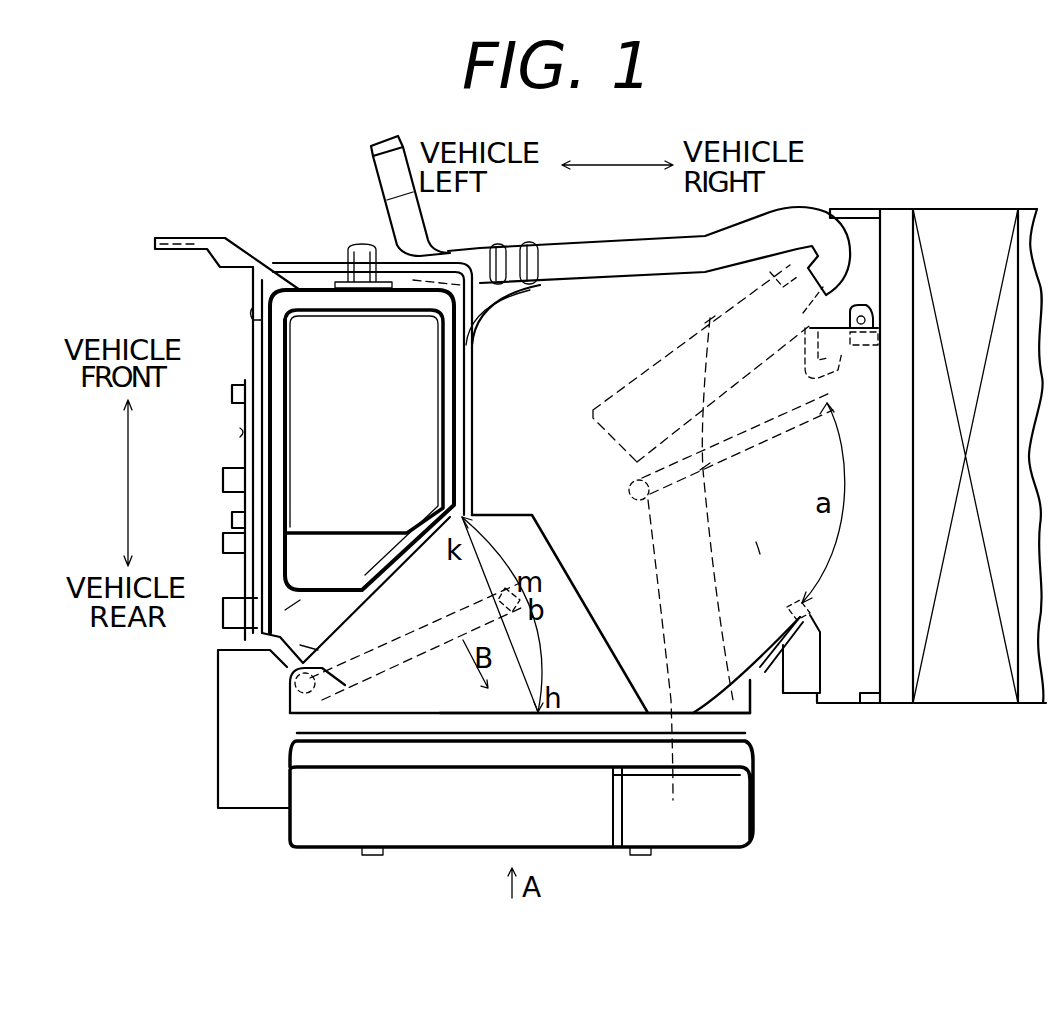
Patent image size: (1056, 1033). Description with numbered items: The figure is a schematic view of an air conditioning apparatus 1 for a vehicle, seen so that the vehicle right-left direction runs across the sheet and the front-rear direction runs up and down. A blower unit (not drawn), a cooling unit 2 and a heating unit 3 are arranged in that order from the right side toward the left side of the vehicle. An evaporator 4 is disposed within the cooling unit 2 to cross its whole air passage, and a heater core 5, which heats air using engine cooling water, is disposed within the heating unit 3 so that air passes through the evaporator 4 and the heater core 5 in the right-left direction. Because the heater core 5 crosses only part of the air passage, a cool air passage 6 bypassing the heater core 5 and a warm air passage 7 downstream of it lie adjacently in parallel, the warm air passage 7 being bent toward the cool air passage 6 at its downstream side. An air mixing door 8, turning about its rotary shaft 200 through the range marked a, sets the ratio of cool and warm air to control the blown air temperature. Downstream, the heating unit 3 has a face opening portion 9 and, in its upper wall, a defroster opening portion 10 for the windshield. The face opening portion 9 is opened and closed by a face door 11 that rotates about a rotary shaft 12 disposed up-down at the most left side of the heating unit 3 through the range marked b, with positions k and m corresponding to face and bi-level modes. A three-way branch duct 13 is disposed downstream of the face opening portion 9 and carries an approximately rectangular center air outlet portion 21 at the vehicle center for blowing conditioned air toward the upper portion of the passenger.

The air conditioning apparatus 1 is at (802, 207).
The cooling unit 2 is at (963, 200).
The heating unit 3 is at (638, 236).
The evaporator 4 is at (928, 225).
The heater core 5 is at (710, 318).
The cool air passage 6 is at (760, 552).
The warm air passage 7 is at (572, 320).
The air mixing door 8 is at (753, 720).
The face opening portion 9 is at (445, 712).
The defroster opening portion 10 is at (293, 412).
The face door 11 is at (395, 660).
The rotary shaft 12 is at (293, 680).
The three-way branch duct 13 is at (757, 807).
The center air outlet portion 21 is at (475, 840).
The rotary shaft of the air mixing door 200 is at (673, 800).